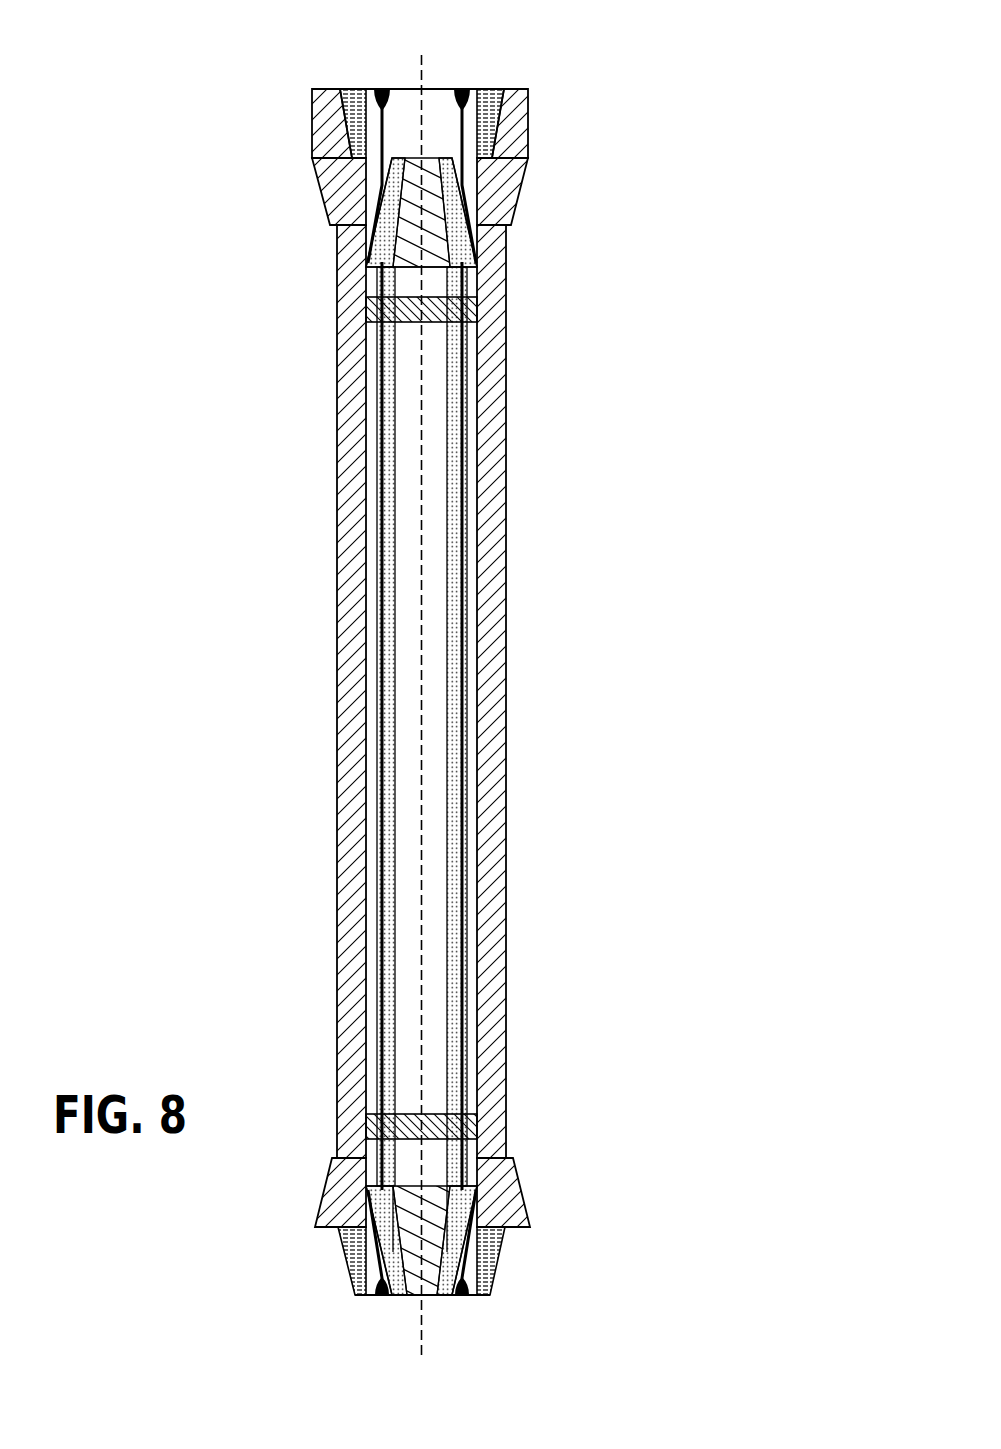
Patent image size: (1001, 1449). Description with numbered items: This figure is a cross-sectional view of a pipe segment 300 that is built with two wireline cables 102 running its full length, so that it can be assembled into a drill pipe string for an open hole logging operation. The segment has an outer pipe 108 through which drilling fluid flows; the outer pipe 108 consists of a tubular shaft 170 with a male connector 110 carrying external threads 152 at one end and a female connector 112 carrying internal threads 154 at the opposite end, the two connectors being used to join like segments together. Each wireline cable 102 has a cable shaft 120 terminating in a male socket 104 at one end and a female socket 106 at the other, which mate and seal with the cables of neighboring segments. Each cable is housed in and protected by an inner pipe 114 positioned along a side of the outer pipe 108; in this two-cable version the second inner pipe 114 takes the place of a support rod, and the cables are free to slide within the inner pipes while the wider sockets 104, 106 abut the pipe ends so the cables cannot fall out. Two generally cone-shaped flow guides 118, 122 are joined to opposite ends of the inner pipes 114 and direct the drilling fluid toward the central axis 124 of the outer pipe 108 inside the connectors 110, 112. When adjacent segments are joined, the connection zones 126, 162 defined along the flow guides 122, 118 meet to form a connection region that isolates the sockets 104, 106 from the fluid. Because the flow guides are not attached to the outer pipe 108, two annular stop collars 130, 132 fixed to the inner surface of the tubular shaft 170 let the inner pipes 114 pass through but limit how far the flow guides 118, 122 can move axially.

The pipe segment 300 is at (685, 338).
The outer pipe 108 is at (565, 860).
The central axis 124 is at (427, 72).
The tubular shaft 170 is at (495, 610).
The wireline cable 102 is at (453, 726).
The cable shaft 120 is at (463, 520).
The inner pipe 114 is at (382, 465).
The flow guide 118 is at (465, 188).
The flow guide 122 is at (478, 1215).
The stop collar 130 is at (405, 312).
The stop collar 132 is at (405, 1115).
The female connector 112 is at (520, 132).
The internal threads 154 is at (348, 122).
The connection zone 126 is at (375, 182).
The male connector 110 is at (520, 1172).
The external threads 152 is at (347, 1260).
The connection zone 162 is at (497, 1260).
The female socket 106 is at (378, 90).
The male socket 104 is at (380, 1297).